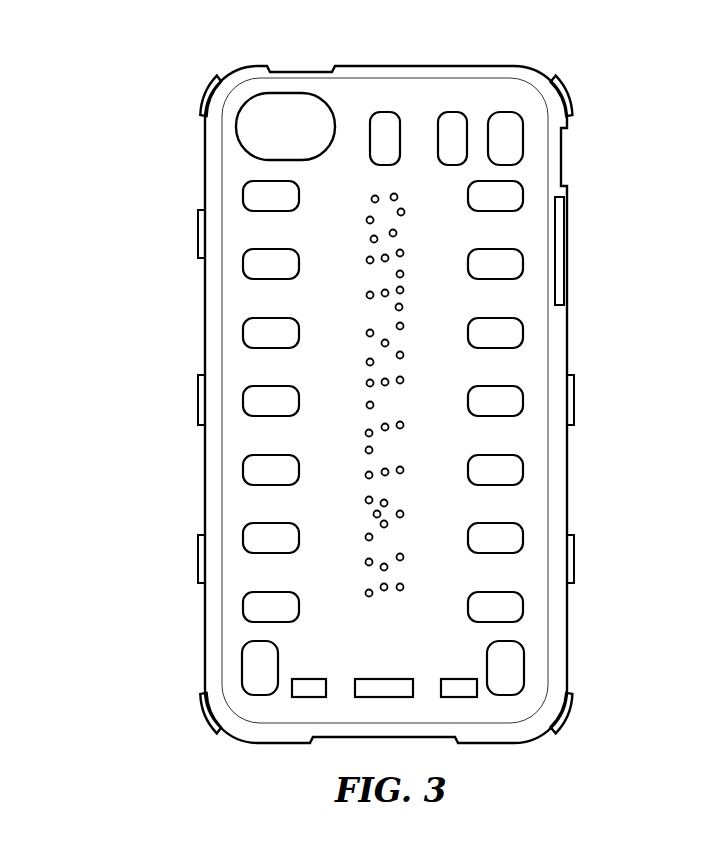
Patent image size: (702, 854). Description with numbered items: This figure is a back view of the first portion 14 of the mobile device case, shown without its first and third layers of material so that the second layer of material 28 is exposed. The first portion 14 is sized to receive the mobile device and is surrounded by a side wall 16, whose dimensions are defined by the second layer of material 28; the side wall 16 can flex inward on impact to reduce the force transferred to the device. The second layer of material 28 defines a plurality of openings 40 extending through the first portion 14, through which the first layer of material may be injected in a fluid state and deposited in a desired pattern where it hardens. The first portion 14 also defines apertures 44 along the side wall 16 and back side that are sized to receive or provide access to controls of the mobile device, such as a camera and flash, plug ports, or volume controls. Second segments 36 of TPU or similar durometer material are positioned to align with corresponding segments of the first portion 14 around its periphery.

The first portion 14 is at (592, 80).
The side wall 16 is at (567, 484).
The second layer of material 28 is at (357, 641).
The second segments 36 is at (512, 368).
The openings 40 is at (508, 193).
The apertures 44 is at (275, 130).